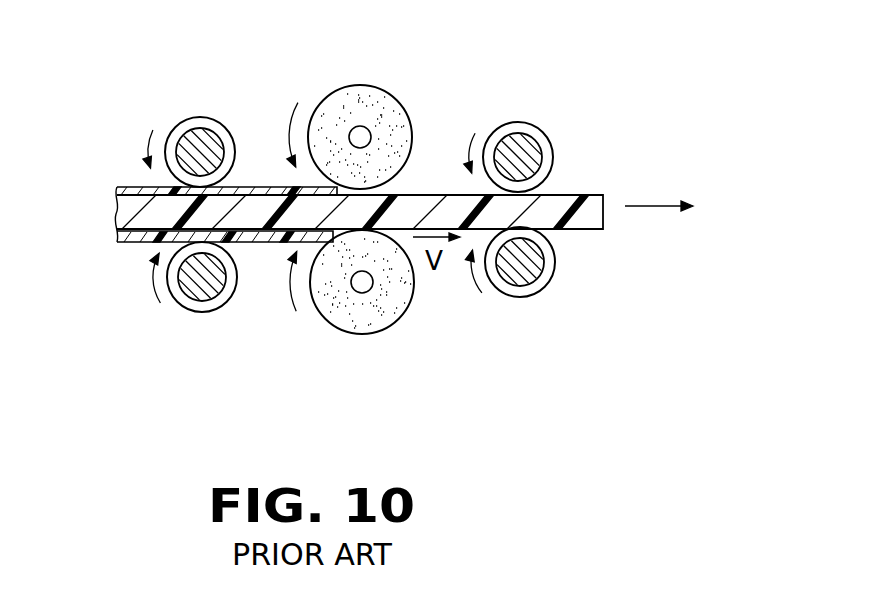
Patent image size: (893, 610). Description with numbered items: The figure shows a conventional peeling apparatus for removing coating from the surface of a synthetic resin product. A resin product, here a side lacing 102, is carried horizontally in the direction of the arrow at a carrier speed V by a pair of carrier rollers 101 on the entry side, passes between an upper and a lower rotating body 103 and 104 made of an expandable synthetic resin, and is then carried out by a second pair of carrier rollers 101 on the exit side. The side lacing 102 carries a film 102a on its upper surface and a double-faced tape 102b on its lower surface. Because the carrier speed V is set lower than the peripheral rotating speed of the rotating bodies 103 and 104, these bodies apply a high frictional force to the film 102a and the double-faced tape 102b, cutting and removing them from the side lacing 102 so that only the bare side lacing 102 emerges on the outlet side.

The carrier rollers 101 is at (200, 135).
The side lacing 102 is at (430, 205).
The film 102a is at (132, 190).
The double-faced tape 102b is at (142, 243).
The rotating body 103 is at (363, 88).
The rotating body 104 is at (372, 325).